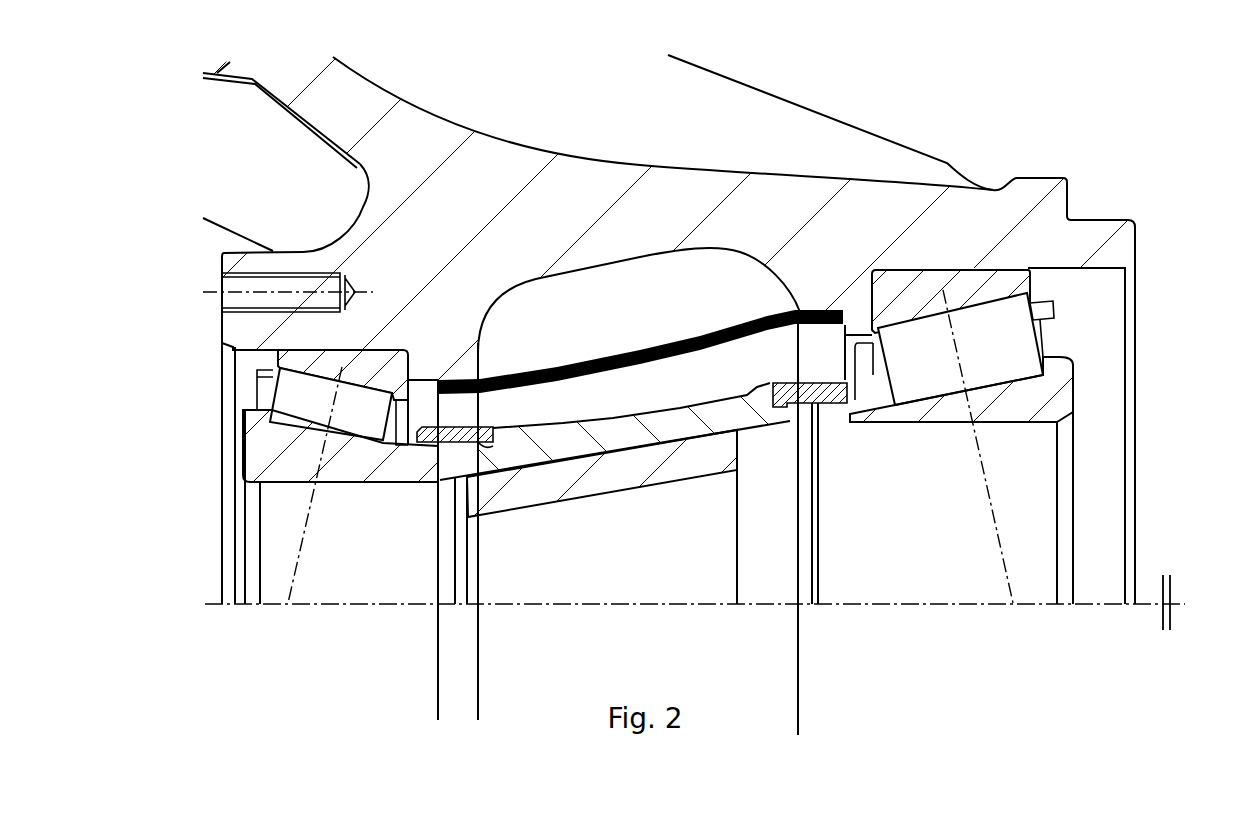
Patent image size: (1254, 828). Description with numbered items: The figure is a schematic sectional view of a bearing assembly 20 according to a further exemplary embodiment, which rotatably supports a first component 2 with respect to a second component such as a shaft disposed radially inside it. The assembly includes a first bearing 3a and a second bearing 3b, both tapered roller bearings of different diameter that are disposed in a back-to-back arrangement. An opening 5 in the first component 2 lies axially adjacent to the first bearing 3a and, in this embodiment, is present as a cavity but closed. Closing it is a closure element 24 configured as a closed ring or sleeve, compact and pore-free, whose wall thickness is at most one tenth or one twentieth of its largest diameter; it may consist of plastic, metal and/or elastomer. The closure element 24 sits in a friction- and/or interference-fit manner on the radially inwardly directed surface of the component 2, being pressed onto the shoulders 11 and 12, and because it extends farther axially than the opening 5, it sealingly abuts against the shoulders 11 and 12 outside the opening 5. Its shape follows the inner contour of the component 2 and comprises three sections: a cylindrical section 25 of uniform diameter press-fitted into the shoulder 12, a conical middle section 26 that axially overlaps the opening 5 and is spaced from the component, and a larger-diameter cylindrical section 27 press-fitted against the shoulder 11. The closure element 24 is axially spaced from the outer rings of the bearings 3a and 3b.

The first component 2 is at (928, 222).
The opening 5 is at (687, 257).
The closure element 24 is at (742, 283).
The shoulder 11 is at (847, 300).
The bearing assembly 20 is at (1028, 167).
The first bearing 3a is at (1000, 290).
The second bearing 3b is at (263, 460).
The shoulder 12 is at (438, 380).
The section 25 is at (455, 395).
The middle section 26 is at (602, 372).
The section 27 is at (845, 408).